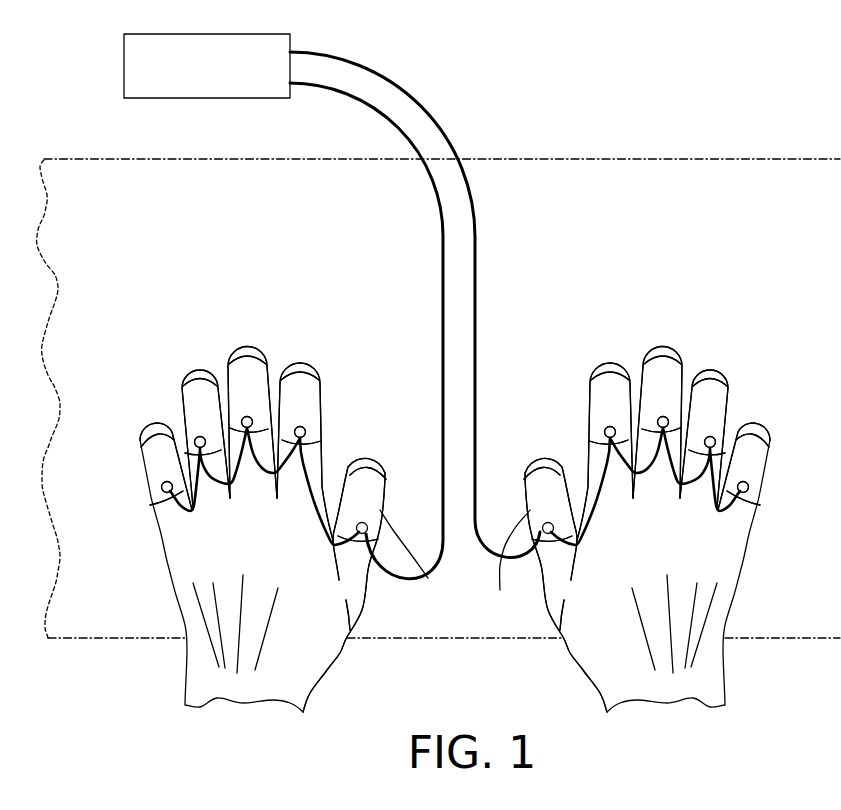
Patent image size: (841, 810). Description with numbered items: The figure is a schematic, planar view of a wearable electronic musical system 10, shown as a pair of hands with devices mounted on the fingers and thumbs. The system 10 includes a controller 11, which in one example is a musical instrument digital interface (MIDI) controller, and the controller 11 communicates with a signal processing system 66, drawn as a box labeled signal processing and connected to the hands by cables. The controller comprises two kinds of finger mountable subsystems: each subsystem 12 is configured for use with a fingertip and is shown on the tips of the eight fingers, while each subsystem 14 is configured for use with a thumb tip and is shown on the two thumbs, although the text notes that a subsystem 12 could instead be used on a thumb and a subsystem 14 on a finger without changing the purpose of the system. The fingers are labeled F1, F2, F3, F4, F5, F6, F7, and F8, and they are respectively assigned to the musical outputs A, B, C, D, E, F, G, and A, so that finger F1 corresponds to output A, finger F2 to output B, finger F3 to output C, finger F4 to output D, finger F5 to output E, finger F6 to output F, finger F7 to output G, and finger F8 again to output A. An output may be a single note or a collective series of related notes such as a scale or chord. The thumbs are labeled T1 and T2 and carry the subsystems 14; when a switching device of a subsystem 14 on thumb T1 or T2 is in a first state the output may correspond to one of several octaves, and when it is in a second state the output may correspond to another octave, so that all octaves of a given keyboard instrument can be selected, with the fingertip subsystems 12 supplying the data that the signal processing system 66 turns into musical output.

The wearable electronic musical system 10 is at (648, 128).
The controller 11 is at (823, 185).
The finger mountable subsystem 12 is at (153, 422).
The finger mountable subsystem 14 is at (417, 580).
The signal processing system 66 is at (124, 67).
The finger F1 is at (169, 481).
The finger F2 is at (206, 447).
The finger F3 is at (252, 430).
The finger F4 is at (305, 451).
The finger F5 is at (605, 451).
The finger F6 is at (657, 427).
The finger F7 is at (704, 445).
The finger F8 is at (743, 480).
The thumb T1 is at (344, 585).
The thumb T2 is at (565, 585).
The musical output A is at (455, 526).
The musical output B is at (214, 496).
The musical output C is at (256, 484).
The musical output D is at (302, 492).
The musical output E is at (612, 484).
The musical output F is at (659, 477).
The musical output G is at (699, 493).